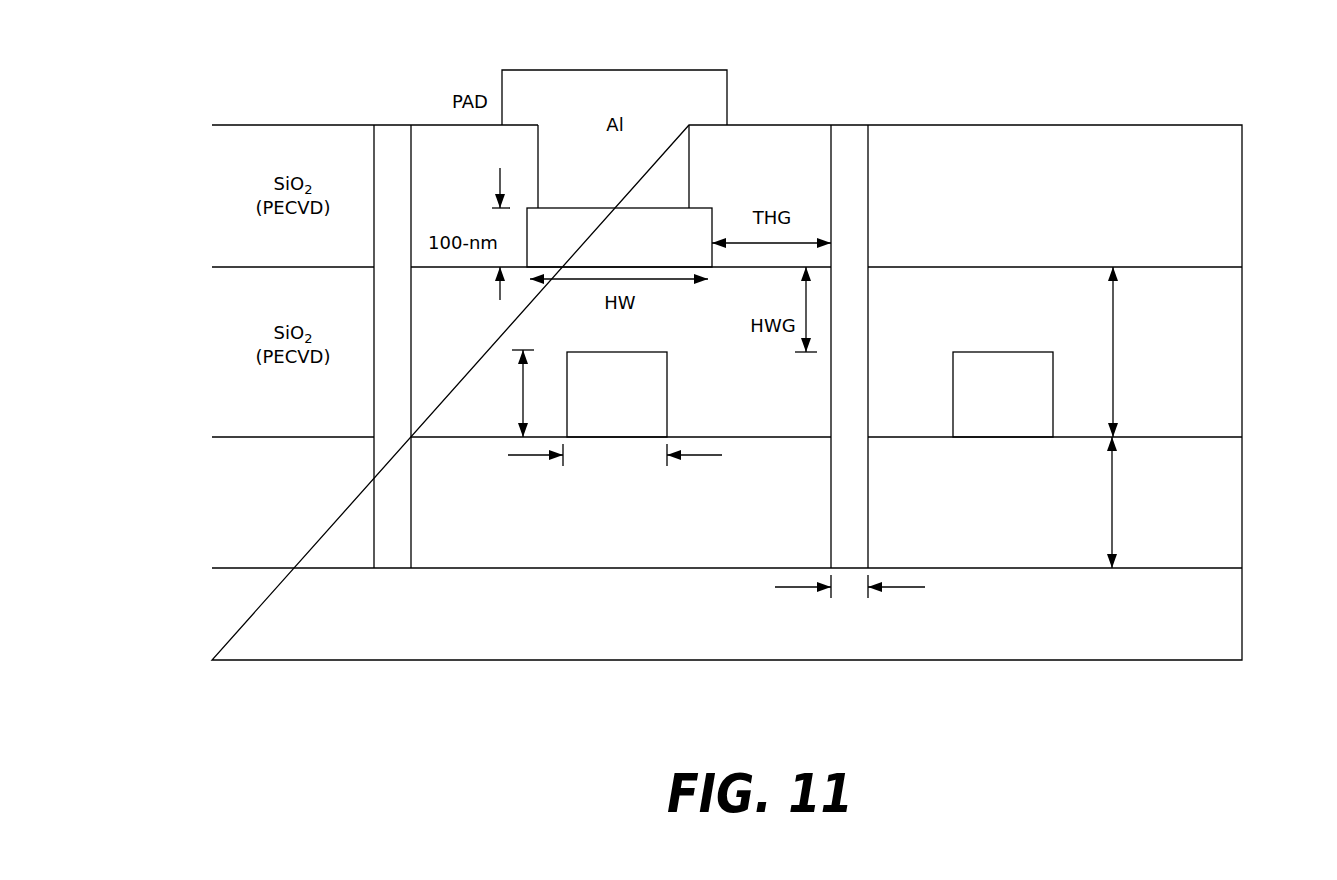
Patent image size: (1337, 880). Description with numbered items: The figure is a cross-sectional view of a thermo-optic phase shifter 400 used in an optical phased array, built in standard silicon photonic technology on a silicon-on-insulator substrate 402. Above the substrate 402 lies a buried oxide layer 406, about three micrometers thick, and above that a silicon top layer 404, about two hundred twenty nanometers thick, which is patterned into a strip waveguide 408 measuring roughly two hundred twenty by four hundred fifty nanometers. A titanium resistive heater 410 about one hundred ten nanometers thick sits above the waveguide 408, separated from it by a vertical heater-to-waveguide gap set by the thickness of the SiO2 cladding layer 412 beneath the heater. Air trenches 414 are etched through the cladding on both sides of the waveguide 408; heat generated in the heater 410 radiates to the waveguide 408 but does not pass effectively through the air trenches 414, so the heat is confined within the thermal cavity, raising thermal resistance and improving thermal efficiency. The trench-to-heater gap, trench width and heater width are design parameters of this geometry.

The phase shifter 400 is at (128, 102).
The silicon-on-insulator (SOI) substrate 402 is at (232, 612).
The silicon top layer 404 is at (1085, 338).
The buried oxide (BOX) layer 406 is at (232, 496).
The strip waveguide 408 is at (648, 425).
The Ti heater 410 is at (700, 208).
The SiO2 cladding layer 412 is at (812, 377).
The air trench 414 is at (374, 143).